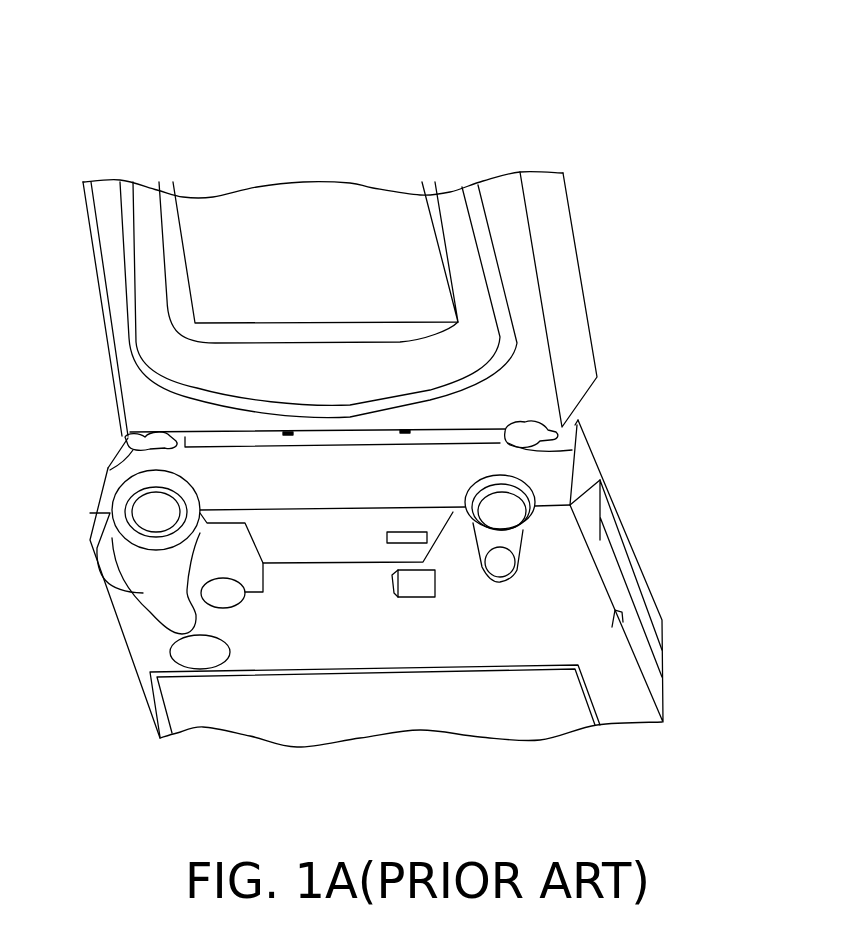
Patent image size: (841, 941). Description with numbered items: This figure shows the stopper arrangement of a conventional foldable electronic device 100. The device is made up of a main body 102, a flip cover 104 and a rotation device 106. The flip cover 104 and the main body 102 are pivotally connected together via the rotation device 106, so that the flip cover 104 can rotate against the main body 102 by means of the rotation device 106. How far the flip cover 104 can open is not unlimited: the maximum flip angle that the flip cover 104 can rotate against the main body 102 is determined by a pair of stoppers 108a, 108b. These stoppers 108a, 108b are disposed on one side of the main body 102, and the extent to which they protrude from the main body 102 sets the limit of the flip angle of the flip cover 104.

The foldable electronic device 100 is at (717, 49).
The main body 102 is at (580, 618).
The flip cover 104 is at (455, 210).
The rotation device 106 is at (587, 470).
The stopper 108a is at (147, 445).
The stopper 108b is at (570, 450).